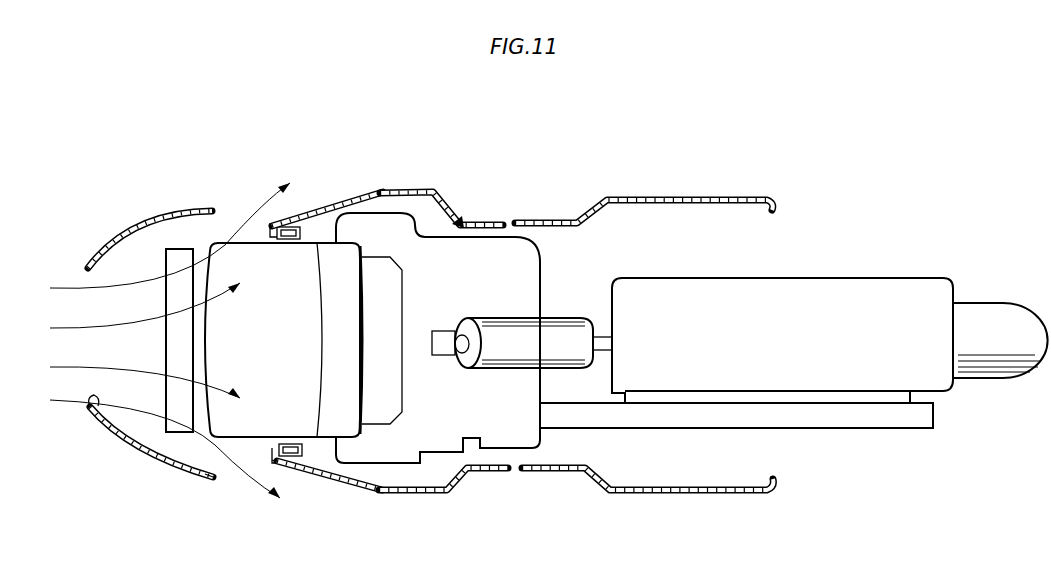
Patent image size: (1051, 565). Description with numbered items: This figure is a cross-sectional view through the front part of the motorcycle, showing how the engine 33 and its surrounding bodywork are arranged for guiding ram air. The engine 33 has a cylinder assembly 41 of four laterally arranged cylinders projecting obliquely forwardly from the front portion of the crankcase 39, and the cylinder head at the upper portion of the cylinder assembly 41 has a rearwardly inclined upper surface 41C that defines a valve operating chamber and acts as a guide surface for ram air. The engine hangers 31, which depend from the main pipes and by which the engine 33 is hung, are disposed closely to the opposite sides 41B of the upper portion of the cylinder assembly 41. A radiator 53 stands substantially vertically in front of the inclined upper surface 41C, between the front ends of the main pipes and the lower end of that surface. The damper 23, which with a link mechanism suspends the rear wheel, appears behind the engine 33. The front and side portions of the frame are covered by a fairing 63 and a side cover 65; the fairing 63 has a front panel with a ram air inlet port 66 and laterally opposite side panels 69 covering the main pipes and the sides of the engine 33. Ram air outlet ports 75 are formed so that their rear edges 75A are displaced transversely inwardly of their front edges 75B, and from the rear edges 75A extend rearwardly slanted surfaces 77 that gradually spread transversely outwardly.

The damper 23 is at (560, 333).
The engine hanger 31 is at (295, 224).
The engine 33 is at (462, 222).
The crankcase 39 is at (512, 262).
The cylinder assembly 41 is at (348, 403).
The opposite sides of upper portion of cylinder assembly 41B is at (318, 240).
The upper surface of cylinder head 41C is at (313, 303).
The radiator 53 is at (170, 268).
The fairing 63 is at (128, 458).
The side cover 65 is at (712, 200).
The ram air inlet port 66 is at (92, 400).
The side panel 69 is at (425, 192).
The ram air outlet port 75 is at (213, 205).
The rear edge of ram air outlet port 75A is at (283, 464).
The front edge of ram air outlet port 75B is at (206, 480).
The rearwardly slanted surface 77 is at (340, 202).